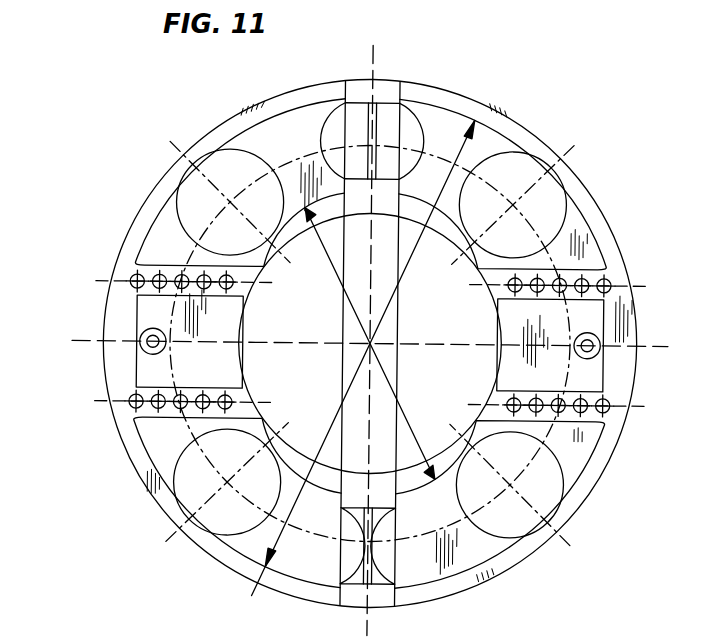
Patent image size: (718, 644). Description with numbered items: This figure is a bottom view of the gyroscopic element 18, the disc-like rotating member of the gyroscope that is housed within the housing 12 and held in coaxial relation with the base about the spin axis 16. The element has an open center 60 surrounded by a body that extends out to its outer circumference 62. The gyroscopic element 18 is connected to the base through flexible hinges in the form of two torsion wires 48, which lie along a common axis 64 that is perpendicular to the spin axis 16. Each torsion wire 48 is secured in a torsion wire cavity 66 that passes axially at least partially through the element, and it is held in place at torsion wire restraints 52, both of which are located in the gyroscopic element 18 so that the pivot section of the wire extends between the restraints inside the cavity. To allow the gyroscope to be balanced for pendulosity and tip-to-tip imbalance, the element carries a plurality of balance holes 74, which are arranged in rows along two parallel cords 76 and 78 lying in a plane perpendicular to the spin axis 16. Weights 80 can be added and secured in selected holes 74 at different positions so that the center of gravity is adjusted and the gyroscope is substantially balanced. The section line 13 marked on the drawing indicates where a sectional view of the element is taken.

The housing 12 is at (69, 340).
The section line 13- 13 is at (375, 46).
The spin axis 16 is at (376, 346).
The gyroscopic element 18 is at (379, 337).
The torsion wire 48 is at (366, 139).
The torsion wire restraint 52 is at (381, 109).
The open center 60 is at (478, 303).
The outer circumference 62 is at (524, 126).
The common axis 64 is at (376, 58).
The torsion wire cavity 66 is at (423, 118).
The balance holes 74 is at (611, 279).
The cord 76 is at (652, 283).
The cord 78 is at (650, 405).
The weights 80 is at (148, 419).